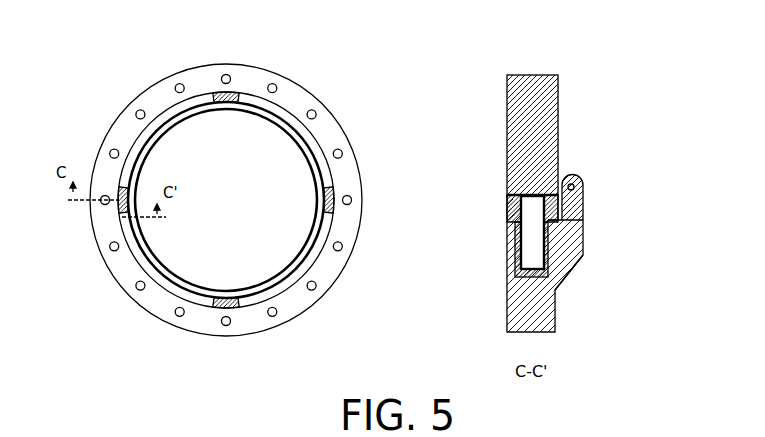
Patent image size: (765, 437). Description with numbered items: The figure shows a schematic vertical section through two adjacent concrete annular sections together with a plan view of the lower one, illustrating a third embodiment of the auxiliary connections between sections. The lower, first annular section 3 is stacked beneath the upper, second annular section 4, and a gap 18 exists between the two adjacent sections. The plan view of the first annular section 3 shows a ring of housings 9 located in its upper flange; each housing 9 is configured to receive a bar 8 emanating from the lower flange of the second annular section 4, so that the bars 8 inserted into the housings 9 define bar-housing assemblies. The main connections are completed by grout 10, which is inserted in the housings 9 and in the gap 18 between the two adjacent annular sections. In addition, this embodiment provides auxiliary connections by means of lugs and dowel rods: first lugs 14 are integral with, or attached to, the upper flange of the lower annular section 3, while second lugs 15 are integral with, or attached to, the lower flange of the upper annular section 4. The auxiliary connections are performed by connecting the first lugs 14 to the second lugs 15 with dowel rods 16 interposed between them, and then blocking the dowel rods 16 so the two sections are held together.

The first annular section 3 is at (300, 137).
The second annular section 4 is at (160, 93).
The bar 8 is at (507, 209).
The housing 9 is at (223, 77).
The grout 10 is at (556, 288).
The first lug 14 is at (328, 200).
The second lug 15 is at (325, 196).
The dowel rod 16 is at (220, 304).
The gap 18 is at (548, 193).